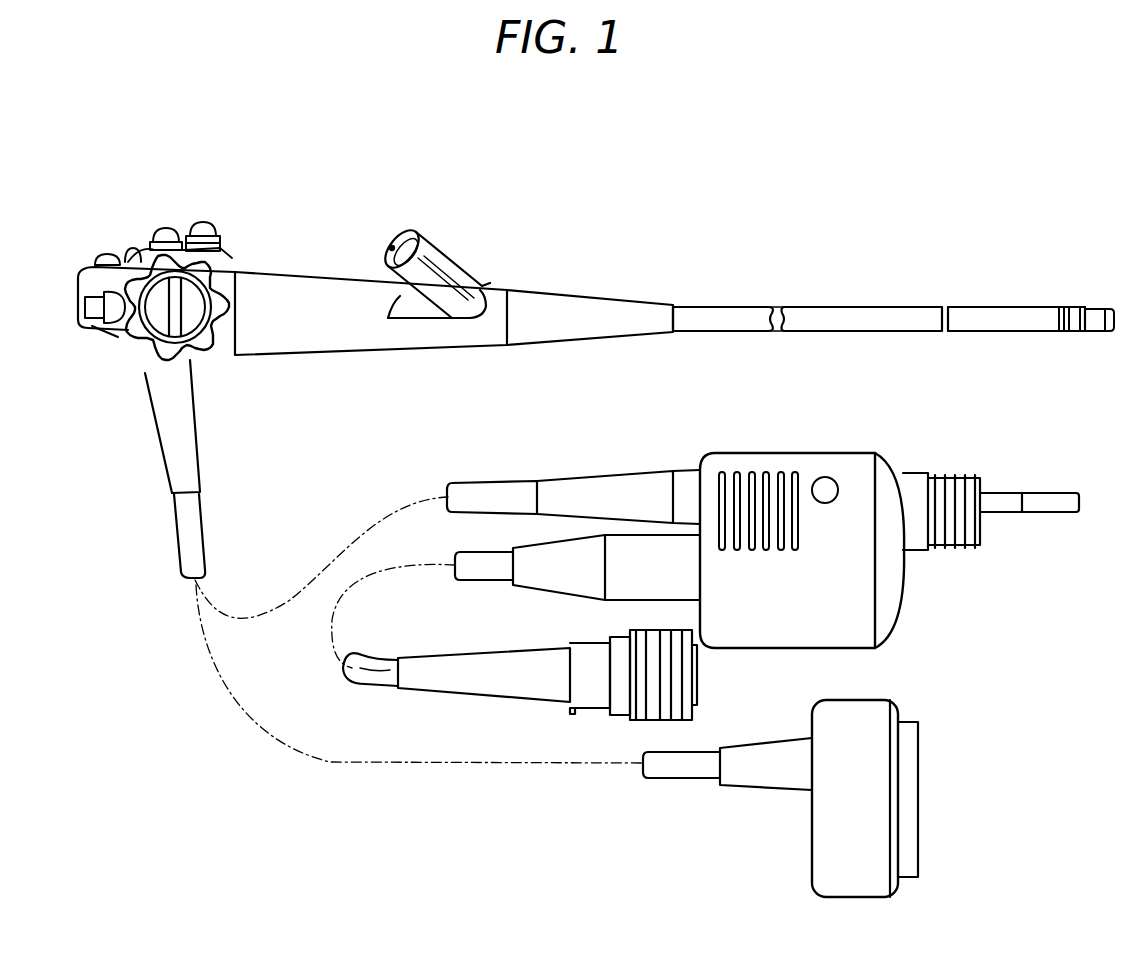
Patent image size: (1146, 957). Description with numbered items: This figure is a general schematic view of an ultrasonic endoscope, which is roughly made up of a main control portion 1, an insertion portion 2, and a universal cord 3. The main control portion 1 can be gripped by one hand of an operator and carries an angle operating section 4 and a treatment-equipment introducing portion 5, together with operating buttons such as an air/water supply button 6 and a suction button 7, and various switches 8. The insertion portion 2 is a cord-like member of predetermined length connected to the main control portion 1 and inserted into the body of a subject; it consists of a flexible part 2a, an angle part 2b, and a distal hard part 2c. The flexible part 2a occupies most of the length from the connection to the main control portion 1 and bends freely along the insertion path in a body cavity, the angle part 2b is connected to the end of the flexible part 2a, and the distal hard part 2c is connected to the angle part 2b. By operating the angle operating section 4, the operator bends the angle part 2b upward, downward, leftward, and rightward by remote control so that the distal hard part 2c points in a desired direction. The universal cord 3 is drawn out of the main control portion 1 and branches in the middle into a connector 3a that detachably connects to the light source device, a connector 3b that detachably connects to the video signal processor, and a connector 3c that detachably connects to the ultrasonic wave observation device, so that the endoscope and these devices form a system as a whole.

The main control portion 1 is at (335, 290).
The insertion portion 2 is at (813, 230).
The flexible part 2a is at (884, 313).
The angle part 2b is at (1004, 313).
The distal hard part 2c is at (1098, 313).
The universal cord 3 is at (180, 525).
The connector 3a is at (888, 600).
The connector 3b is at (700, 673).
The connector 3c is at (882, 790).
The angle operating section 4 is at (140, 357).
The treatment-equipment introducing portion 5 is at (454, 282).
The air/water supply button 6 is at (205, 222).
The suction button 7 is at (165, 228).
The switches 8 is at (135, 250).